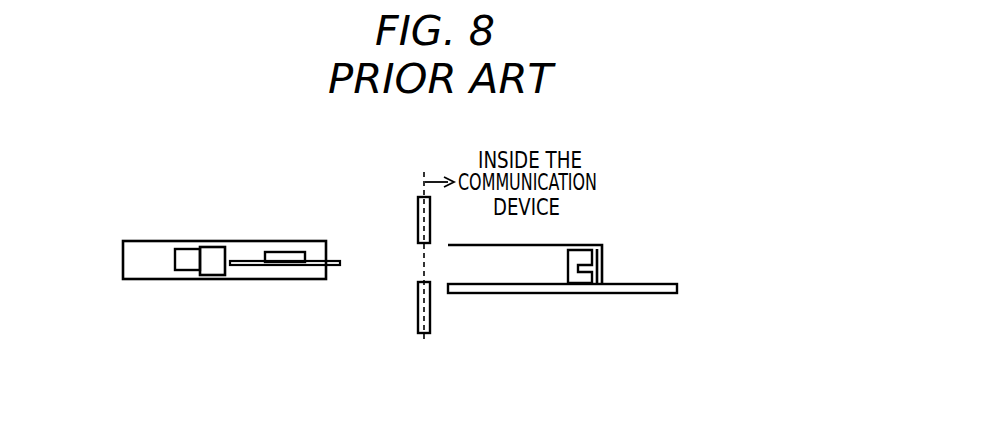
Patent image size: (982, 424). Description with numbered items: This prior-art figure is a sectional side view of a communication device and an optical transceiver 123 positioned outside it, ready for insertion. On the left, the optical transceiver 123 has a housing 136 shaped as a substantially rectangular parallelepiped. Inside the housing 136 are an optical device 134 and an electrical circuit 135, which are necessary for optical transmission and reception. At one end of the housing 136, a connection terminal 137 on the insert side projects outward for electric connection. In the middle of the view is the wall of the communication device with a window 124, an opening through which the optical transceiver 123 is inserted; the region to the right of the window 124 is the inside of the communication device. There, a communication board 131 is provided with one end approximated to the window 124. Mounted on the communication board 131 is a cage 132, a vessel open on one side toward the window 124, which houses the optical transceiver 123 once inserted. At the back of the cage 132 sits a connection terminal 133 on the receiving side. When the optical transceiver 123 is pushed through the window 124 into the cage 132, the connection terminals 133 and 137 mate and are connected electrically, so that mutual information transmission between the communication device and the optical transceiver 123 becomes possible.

The optical transceiver 123 is at (155, 240).
The window 124 is at (415, 247).
The communication board 131 is at (655, 283).
The cage 132 is at (553, 244).
The connection terminal 133 is at (585, 283).
The optical device 134 is at (207, 279).
The electrical circuit 135 is at (273, 279).
The housing 136 is at (242, 240).
The connection terminal 137 is at (332, 266).